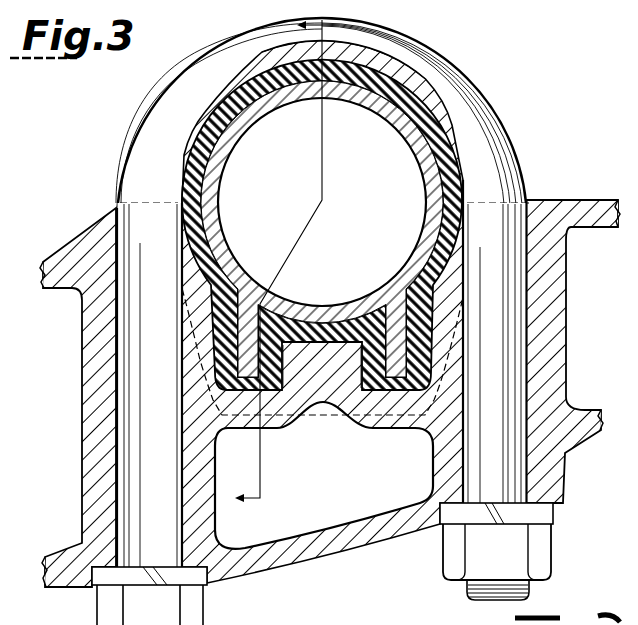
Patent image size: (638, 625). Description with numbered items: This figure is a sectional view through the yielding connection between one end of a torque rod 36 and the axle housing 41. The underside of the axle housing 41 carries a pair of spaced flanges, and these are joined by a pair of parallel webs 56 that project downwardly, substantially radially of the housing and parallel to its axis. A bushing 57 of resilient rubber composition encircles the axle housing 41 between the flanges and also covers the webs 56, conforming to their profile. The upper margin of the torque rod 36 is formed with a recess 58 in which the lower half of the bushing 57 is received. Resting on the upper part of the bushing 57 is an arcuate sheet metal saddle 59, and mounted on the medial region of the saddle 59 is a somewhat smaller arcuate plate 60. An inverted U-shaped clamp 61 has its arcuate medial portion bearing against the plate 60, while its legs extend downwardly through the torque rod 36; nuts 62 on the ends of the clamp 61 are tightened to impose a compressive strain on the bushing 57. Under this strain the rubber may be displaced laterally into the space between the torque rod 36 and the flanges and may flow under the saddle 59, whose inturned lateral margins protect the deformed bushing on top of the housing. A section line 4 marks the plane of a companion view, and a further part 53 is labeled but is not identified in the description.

The section line 4- 4 is at (274, 251).
The torque rod 36 is at (67, 247).
The axle housing 41 is at (451, 140).
The hidden cylindrical boss outline 53 is at (340, 414).
The webs 56 is at (240, 382).
The bushing or sleeve of resilient rubber composition 57 is at (465, 185).
The recess 58 is at (300, 382).
The arcuate sheet metal saddle 59 is at (401, 75).
The arcuate plate 60 is at (253, 60).
The inverted U-shaped clamp 61 is at (176, 80).
The nuts 62 is at (541, 553).